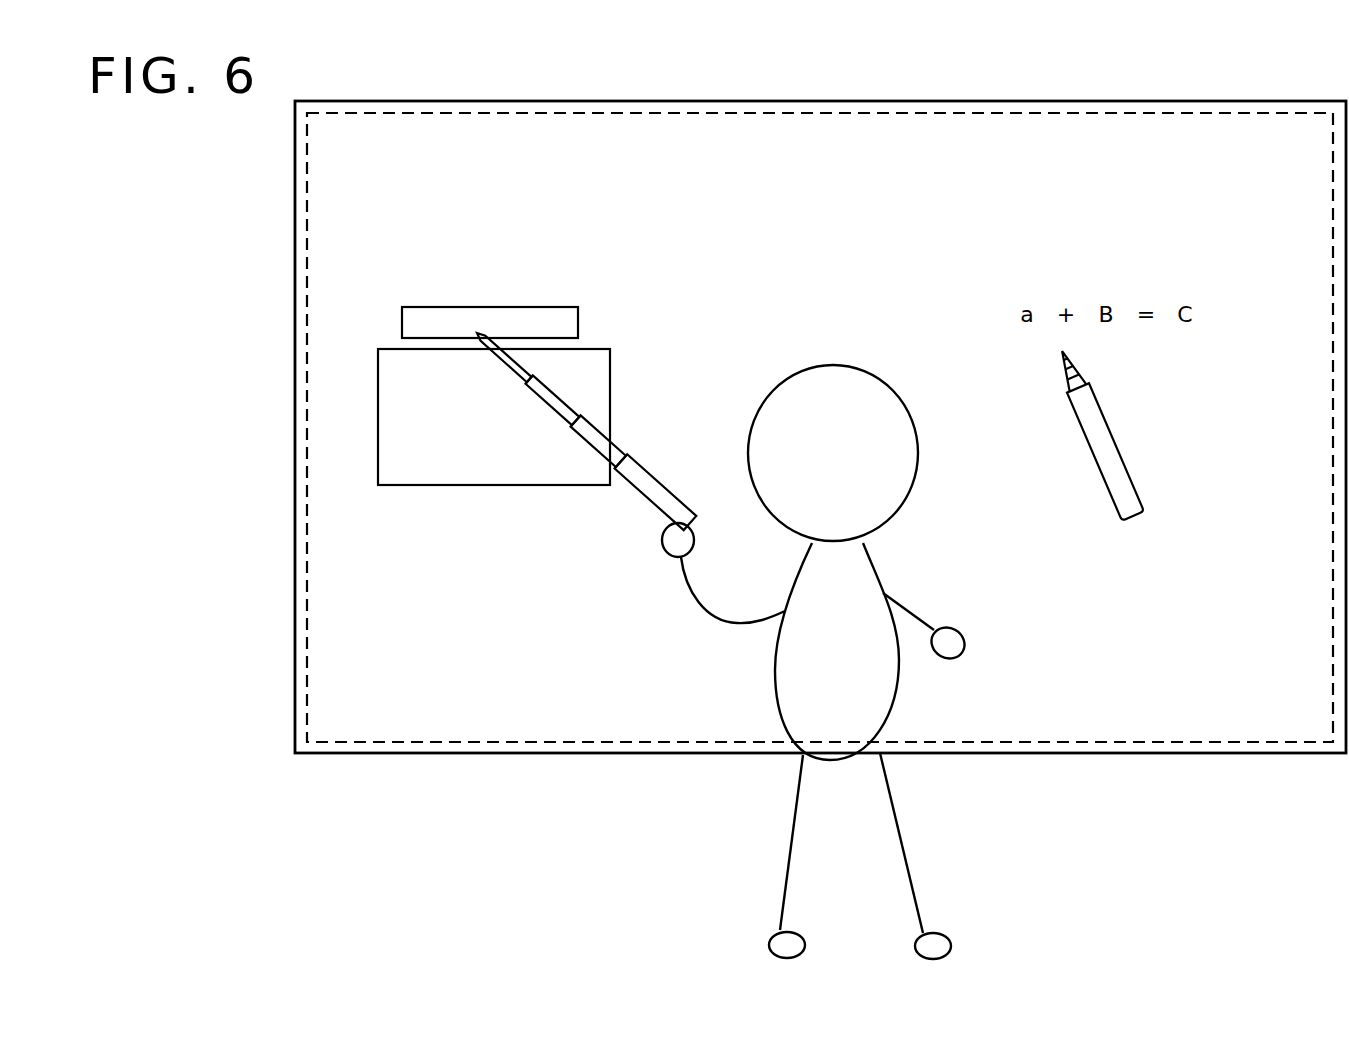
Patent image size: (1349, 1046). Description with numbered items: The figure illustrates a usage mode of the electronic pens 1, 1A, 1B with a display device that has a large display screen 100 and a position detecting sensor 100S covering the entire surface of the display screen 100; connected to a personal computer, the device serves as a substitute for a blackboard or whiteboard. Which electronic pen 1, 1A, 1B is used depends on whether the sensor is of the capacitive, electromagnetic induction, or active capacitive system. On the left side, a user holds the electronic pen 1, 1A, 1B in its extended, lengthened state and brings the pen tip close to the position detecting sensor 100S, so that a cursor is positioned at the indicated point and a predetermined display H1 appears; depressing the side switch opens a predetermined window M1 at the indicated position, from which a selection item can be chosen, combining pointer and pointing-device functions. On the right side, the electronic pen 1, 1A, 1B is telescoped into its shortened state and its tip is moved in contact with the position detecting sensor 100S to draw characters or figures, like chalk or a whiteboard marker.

The display screen 100 is at (592, 100).
The position detecting sensor 100S is at (748, 113).
The predetermined display H1 is at (517, 306).
The predetermined window M1 is at (470, 490).
The electronic pen 1 is at (858, 431).
The electronic pen 1A is at (640, 462).
The electronic pen 1B is at (1113, 430).